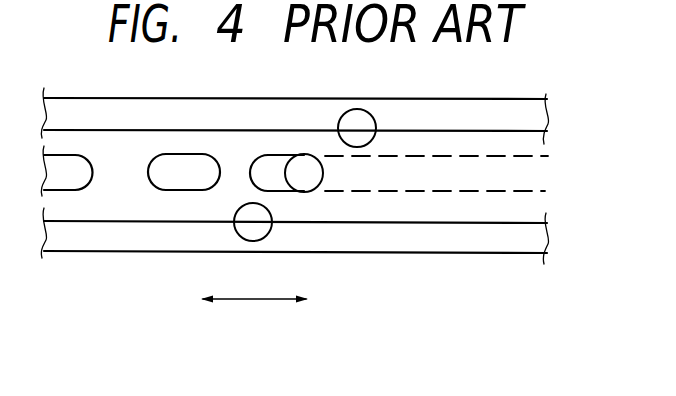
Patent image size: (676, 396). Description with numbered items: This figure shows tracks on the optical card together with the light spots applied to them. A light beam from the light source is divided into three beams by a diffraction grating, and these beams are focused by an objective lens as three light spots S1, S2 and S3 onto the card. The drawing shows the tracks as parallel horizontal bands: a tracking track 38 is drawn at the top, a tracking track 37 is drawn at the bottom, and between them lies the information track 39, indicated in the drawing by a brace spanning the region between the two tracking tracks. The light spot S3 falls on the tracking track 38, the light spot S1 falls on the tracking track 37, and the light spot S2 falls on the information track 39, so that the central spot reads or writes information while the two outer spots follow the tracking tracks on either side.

The tracking track 37 is at (535, 238).
The tracking track 38 is at (535, 118).
The information track 39 is at (557, 130).
The light spot S1 is at (257, 222).
The light spot S2 is at (305, 168).
The light spot S3 is at (363, 127).